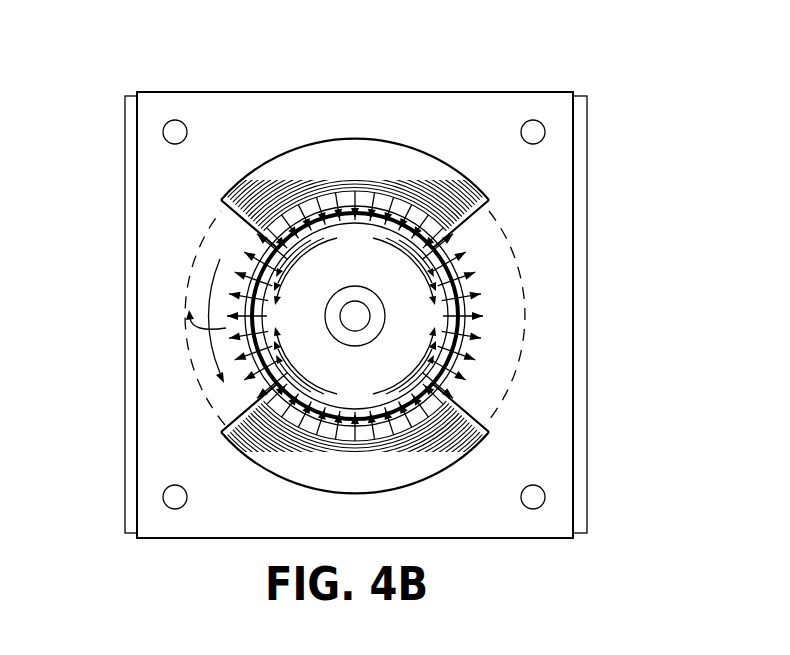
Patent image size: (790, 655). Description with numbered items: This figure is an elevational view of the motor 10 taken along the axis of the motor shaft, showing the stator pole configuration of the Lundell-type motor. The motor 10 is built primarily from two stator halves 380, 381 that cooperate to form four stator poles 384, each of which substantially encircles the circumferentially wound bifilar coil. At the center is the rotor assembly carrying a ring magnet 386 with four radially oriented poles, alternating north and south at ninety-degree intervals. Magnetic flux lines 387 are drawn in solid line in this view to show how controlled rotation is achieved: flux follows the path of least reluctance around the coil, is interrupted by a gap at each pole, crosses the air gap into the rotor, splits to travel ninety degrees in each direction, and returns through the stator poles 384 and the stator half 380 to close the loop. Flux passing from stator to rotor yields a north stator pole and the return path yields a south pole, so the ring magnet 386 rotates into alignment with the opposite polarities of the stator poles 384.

The motor 10 is at (112, 267).
The stator half 380 is at (252, 152).
The stator half 381 is at (586, 160).
The stator pole 384 is at (382, 180).
The ring magnet 386 is at (465, 322).
The magnetic flux lines 387 is at (395, 280).